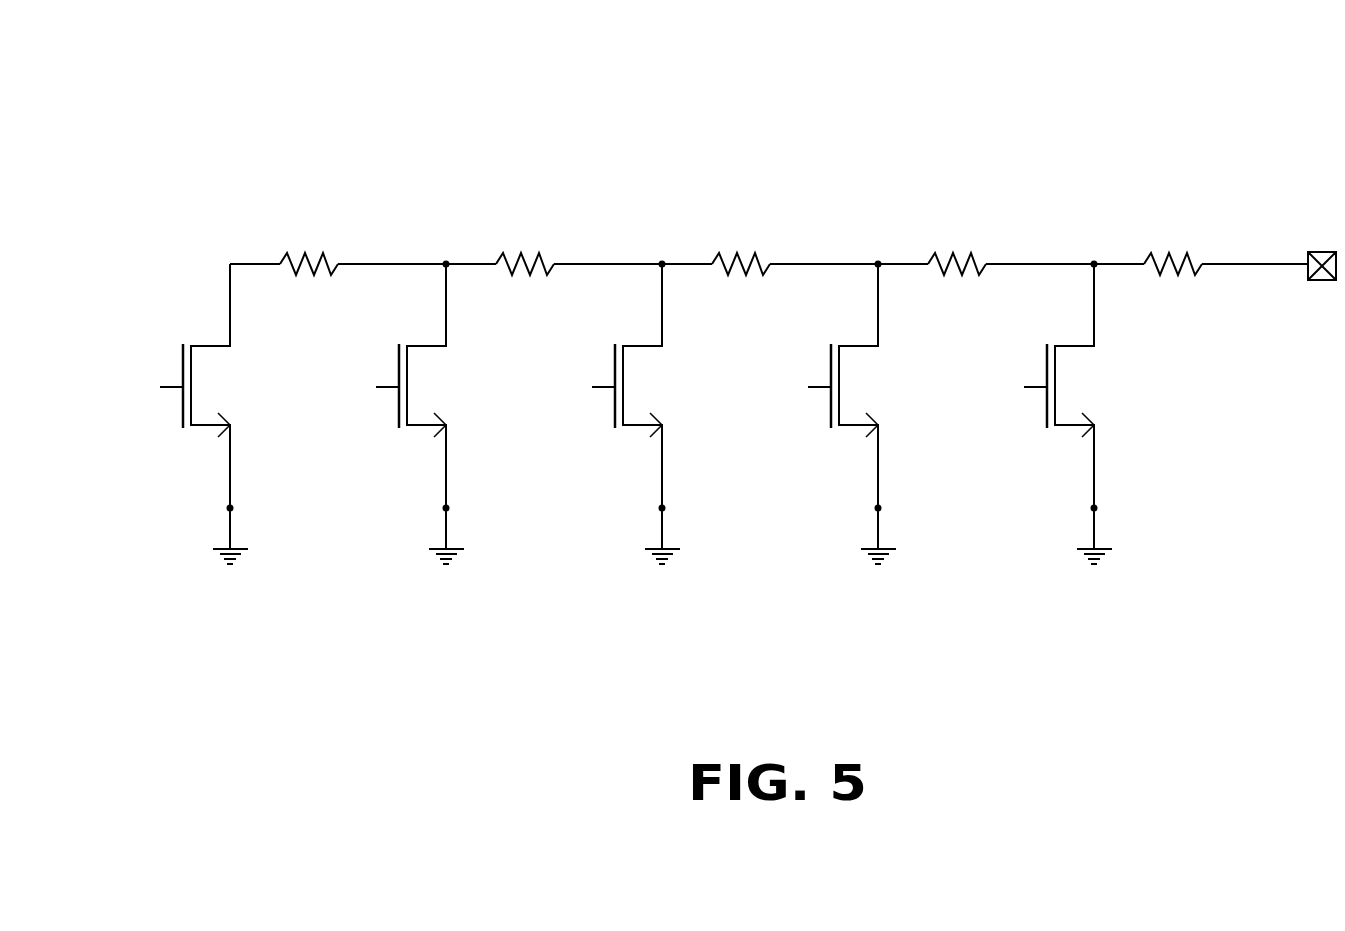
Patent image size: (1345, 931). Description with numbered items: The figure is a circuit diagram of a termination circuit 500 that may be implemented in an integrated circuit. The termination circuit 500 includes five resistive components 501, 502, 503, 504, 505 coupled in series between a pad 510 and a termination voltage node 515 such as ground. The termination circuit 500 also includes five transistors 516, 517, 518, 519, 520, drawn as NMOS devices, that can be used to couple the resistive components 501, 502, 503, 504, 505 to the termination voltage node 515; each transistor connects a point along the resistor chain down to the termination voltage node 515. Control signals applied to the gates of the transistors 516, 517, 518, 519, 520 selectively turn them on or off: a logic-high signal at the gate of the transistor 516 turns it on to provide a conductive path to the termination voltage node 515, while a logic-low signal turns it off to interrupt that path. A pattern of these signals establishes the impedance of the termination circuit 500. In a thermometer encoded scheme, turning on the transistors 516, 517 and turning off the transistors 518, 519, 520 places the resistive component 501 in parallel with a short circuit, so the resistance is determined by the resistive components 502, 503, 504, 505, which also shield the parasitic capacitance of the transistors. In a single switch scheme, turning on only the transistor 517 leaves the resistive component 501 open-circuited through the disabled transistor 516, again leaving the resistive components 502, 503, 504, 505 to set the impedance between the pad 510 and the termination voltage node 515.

The termination circuit 500 is at (1106, 81).
The resistive component 501 is at (305, 253).
The resistive component 502 is at (520, 253).
The resistive component 503 is at (737, 253).
The resistive component 504 is at (955, 253).
The resistive component 505 is at (1168, 253).
The pad 510 is at (1322, 252).
The termination voltage node 515 is at (1098, 508).
The transistor 516 is at (210, 344).
The transistor 517 is at (424, 344).
The transistor 518 is at (640, 344).
The transistor 519 is at (856, 344).
The transistor 520 is at (1072, 344).